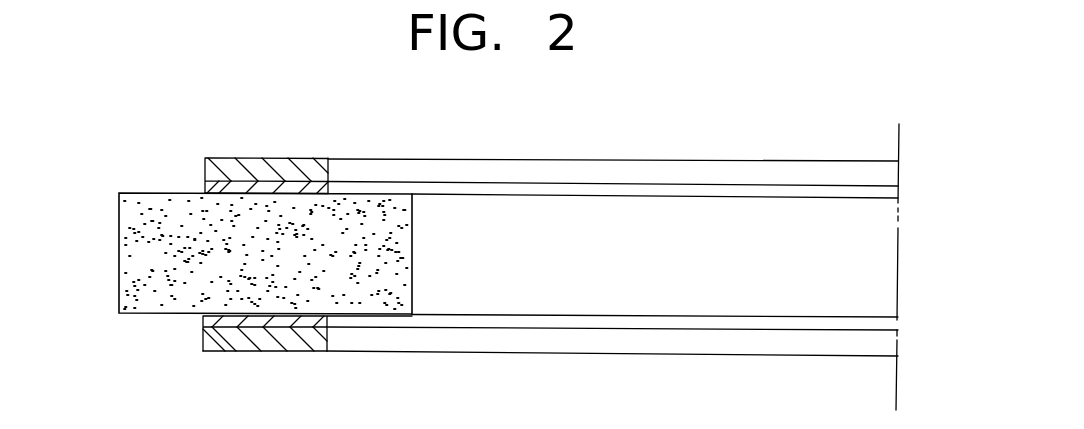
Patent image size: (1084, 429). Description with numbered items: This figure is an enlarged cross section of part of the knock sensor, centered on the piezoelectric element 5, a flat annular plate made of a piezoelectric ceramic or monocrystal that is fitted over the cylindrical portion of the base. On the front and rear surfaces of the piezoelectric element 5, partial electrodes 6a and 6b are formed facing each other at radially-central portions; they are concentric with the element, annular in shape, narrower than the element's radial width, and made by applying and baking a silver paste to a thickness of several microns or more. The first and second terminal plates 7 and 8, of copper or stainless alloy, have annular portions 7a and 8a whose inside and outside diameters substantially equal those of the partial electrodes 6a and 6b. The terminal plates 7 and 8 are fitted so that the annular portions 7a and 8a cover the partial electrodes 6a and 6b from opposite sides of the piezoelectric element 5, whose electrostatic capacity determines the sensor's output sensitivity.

The piezoelectric element 5 is at (146, 200).
The partial electrode 6a is at (202, 318).
The partial electrode 6b is at (208, 192).
The first terminal plate 7 is at (387, 339).
The annular portion 7a is at (232, 345).
The second terminal plate 8 is at (380, 163).
The annular portion 8a is at (250, 163).